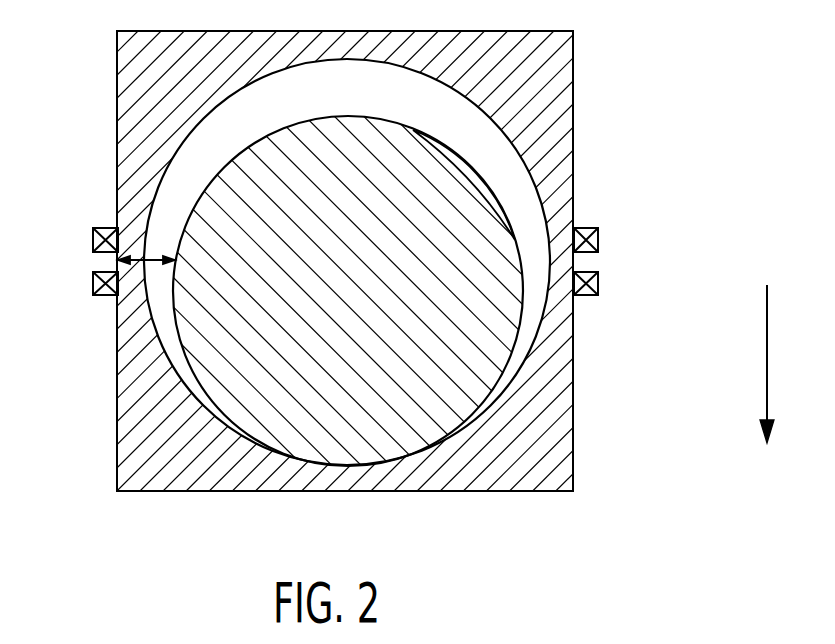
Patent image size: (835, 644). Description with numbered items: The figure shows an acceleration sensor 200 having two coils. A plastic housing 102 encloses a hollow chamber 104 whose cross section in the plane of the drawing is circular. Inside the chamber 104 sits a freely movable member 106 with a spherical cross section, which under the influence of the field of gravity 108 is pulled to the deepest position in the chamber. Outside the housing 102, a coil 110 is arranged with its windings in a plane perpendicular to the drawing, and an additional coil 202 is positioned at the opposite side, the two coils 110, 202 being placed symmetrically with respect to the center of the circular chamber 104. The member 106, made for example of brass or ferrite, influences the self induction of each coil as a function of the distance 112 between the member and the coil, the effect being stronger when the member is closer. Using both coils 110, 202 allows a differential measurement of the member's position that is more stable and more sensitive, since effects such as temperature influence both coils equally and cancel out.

The plastic housing 102 is at (553, 463).
The hollow chamber 104 is at (487, 140).
The freely movable member 106 is at (487, 333).
The field of gravity 108 is at (767, 360).
The coil 110 is at (93, 234).
The distance 112 is at (118, 333).
The acceleration sensor 200 is at (743, 521).
The additional coil 202 is at (598, 236).